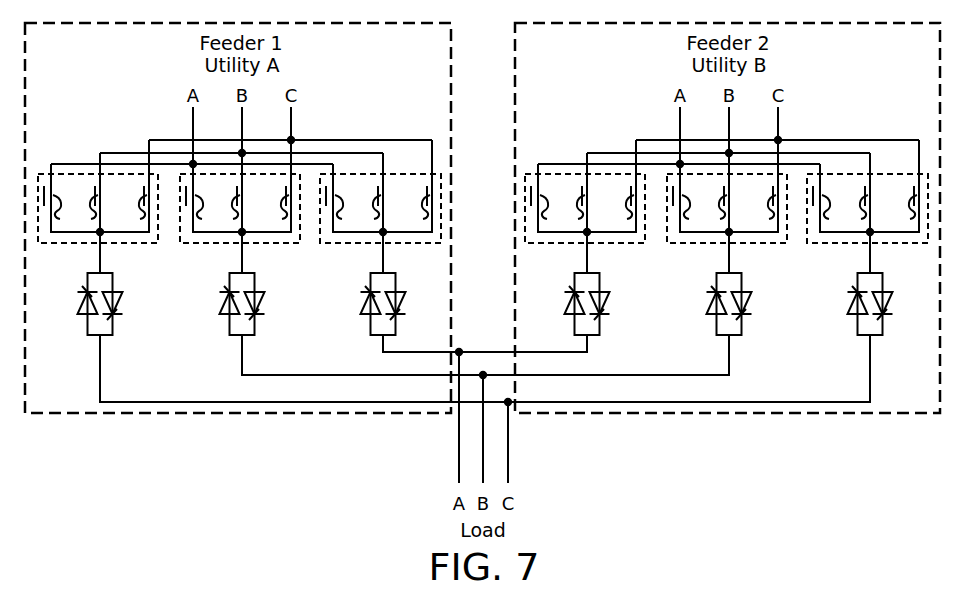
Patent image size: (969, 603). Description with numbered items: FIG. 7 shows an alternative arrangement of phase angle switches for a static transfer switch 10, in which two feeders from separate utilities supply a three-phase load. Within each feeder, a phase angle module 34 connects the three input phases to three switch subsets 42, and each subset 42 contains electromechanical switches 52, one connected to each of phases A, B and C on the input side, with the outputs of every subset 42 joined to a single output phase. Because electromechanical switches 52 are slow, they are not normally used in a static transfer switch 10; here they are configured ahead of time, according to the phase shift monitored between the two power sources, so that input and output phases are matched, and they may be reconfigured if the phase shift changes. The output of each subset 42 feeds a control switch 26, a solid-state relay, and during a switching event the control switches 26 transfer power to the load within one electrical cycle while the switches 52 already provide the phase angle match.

The static transfer switch 10 is at (72, 333).
The control switch 26 is at (835, 329).
The phase angle module 34 is at (70, 156).
The switch subset 42 is at (817, 272).
The electromechanical switch 52 is at (480, 209).